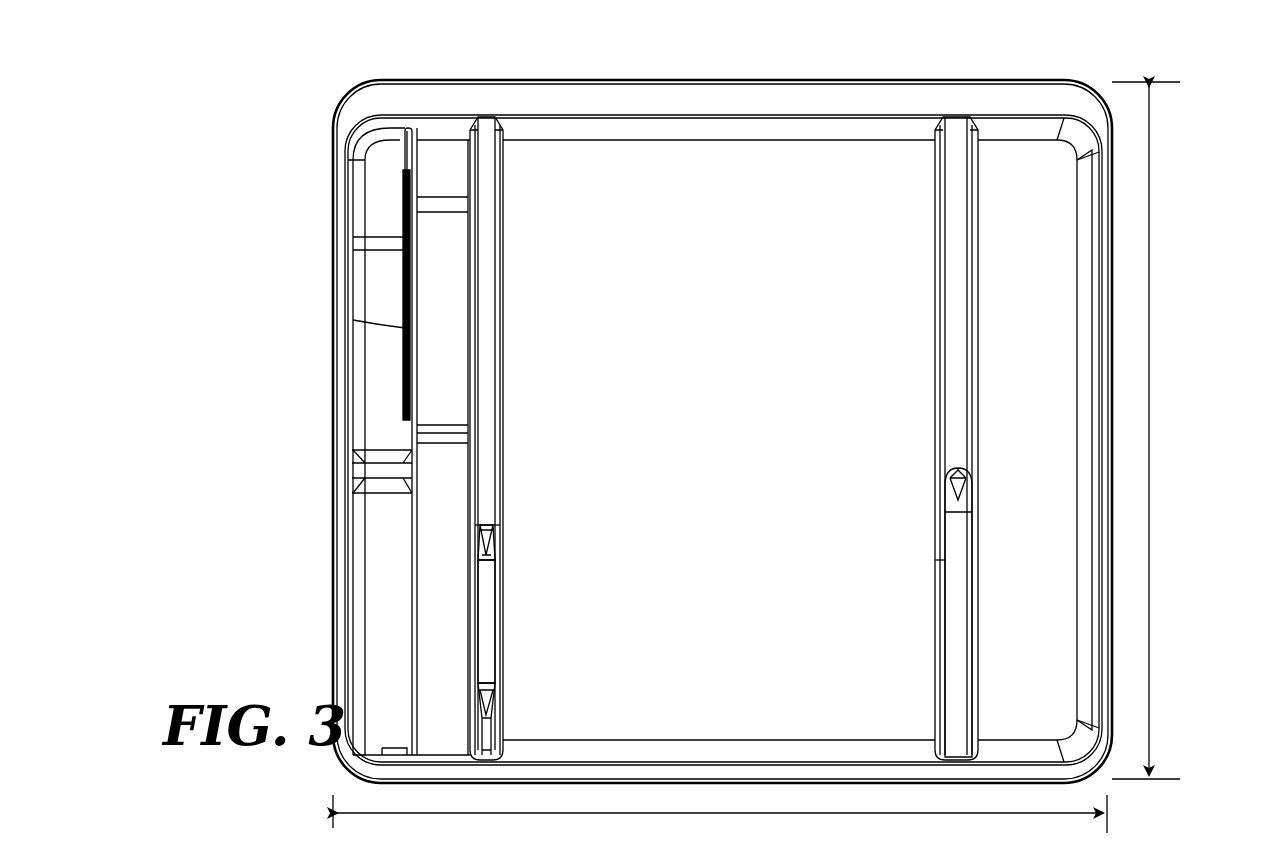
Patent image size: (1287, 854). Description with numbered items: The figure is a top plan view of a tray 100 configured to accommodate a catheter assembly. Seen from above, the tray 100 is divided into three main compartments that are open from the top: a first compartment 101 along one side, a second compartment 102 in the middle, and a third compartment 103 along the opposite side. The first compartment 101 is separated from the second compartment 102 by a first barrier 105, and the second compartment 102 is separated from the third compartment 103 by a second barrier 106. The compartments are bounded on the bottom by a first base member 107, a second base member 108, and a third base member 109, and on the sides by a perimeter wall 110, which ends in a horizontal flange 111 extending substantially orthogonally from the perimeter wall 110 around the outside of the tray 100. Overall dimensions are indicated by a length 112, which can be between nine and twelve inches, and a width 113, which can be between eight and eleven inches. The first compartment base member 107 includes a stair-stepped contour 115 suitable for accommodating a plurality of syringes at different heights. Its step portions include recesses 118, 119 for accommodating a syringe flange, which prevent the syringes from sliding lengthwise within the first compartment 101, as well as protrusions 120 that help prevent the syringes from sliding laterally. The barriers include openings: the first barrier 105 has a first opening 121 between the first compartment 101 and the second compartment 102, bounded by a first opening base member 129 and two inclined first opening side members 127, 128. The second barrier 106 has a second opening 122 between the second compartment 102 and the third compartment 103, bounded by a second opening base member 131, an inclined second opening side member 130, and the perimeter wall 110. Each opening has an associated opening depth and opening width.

The tray 100 is at (290, 190).
The first compartment 101 is at (431, 170).
The second compartment 102 is at (678, 178).
The third compartment 103 is at (1003, 185).
The first barrier 105 is at (500, 228).
The second barrier 106 is at (957, 240).
The first base member 107 is at (458, 516).
The second base member 108 is at (728, 286).
The third base member 109 is at (1042, 518).
The perimeter wall 110 is at (752, 745).
The horizontal flange 111 is at (795, 92).
The length 112 is at (1150, 338).
The width 113 is at (515, 813).
The stair-stepped contour 115 is at (386, 676).
The recess 118 is at (374, 470).
The recess 119 is at (445, 437).
The protrusion 120 is at (402, 328).
The first opening 121 is at (507, 600).
The second opening 122 is at (933, 580).
The inclined first opening side member 127 is at (493, 540).
The inclined first opening side member 128 is at (490, 690).
The first opening base member 129 is at (497, 622).
The inclined second opening side member 130 is at (957, 497).
The second opening base member 131 is at (955, 653).